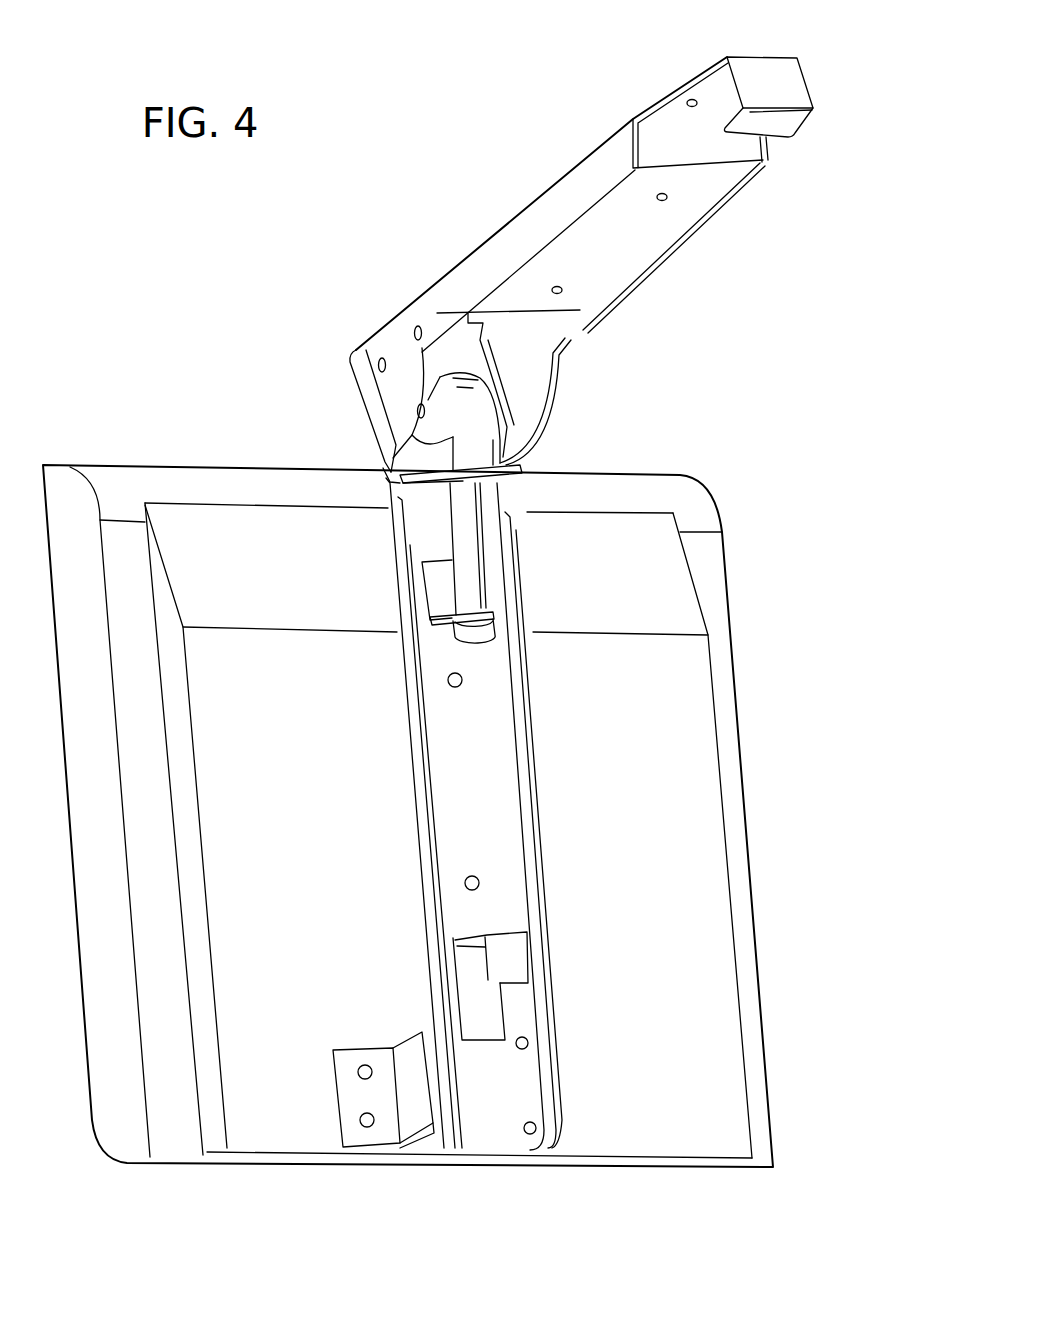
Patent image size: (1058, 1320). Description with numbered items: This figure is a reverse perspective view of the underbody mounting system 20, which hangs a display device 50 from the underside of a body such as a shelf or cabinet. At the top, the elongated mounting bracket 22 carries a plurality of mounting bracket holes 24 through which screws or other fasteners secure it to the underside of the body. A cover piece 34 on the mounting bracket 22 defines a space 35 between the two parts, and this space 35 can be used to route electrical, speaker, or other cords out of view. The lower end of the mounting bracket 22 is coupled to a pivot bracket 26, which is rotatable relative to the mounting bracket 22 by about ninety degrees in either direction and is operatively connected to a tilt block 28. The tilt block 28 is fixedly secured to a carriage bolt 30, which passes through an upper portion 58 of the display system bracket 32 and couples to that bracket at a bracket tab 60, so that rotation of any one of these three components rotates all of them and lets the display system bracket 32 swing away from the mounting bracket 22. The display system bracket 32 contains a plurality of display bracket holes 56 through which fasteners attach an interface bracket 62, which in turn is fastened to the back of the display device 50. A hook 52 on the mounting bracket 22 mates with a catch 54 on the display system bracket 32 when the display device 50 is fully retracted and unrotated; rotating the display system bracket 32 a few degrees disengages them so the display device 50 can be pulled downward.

The underbody mounting system 20 is at (753, 383).
The mounting bracket 22 is at (465, 262).
The mounting bracket holes 24 is at (693, 98).
The pivot bracket 26 is at (488, 350).
The tilt block 28 is at (485, 432).
The carriage bolt 30 is at (463, 535).
The display system bracket 32 is at (495, 1125).
The cover piece 34 is at (643, 242).
The space 35 is at (642, 140).
The display device 50 is at (710, 910).
The hook 52 is at (797, 93).
The catch 54 is at (518, 962).
The display bracket holes 56 is at (463, 678).
The upper portion 58 is at (383, 470).
The bracket tab 60 is at (493, 607).
The interface bracket 62 is at (388, 1140).